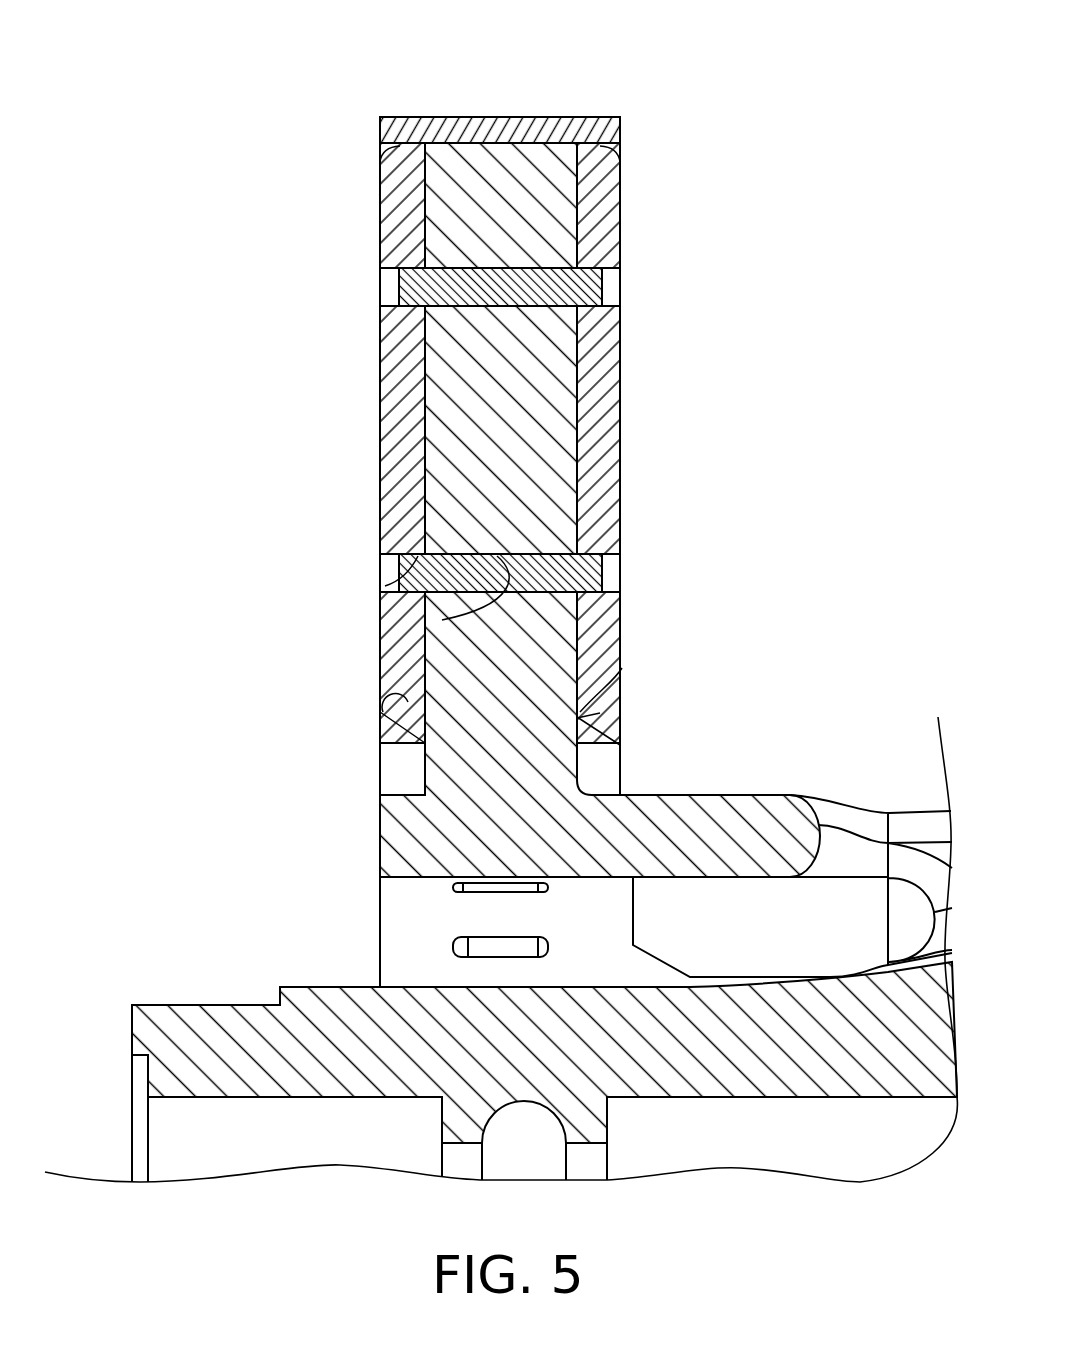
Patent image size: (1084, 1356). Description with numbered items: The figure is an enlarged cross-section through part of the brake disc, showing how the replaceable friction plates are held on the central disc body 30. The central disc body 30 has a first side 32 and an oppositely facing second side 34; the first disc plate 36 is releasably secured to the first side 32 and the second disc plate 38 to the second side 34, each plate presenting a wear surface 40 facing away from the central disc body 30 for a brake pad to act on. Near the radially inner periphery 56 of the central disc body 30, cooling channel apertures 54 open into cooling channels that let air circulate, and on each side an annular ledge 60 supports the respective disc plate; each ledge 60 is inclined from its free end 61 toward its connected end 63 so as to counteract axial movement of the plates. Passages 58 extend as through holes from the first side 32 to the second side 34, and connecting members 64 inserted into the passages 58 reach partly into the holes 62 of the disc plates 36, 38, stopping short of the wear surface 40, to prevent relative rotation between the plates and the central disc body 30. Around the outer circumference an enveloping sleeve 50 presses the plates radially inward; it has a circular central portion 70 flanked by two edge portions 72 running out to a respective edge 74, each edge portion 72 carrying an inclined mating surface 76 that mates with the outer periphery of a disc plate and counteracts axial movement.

The central disc body 30 is at (497, 778).
The first side 32 is at (423, 417).
The second side 34 is at (578, 418).
The first disc plate 36 is at (408, 345).
The second disc plate 38 is at (593, 353).
The wear surface 40 is at (380, 425).
The enveloping sleeve 50 is at (512, 85).
The cooling channel apertures 54 is at (490, 948).
The radially inner periphery 56 is at (447, 912).
The passages 58 is at (435, 582).
The annular ledge 60 is at (380, 712).
The free end 61 is at (577, 718).
The holes 62 is at (610, 575).
The connected end 63 is at (580, 712).
The connecting members 64 is at (485, 612).
The circular central portion 70 is at (488, 130).
The edge portions 72 is at (390, 125).
The edge 74 is at (383, 137).
The mating surface 76 is at (385, 160).